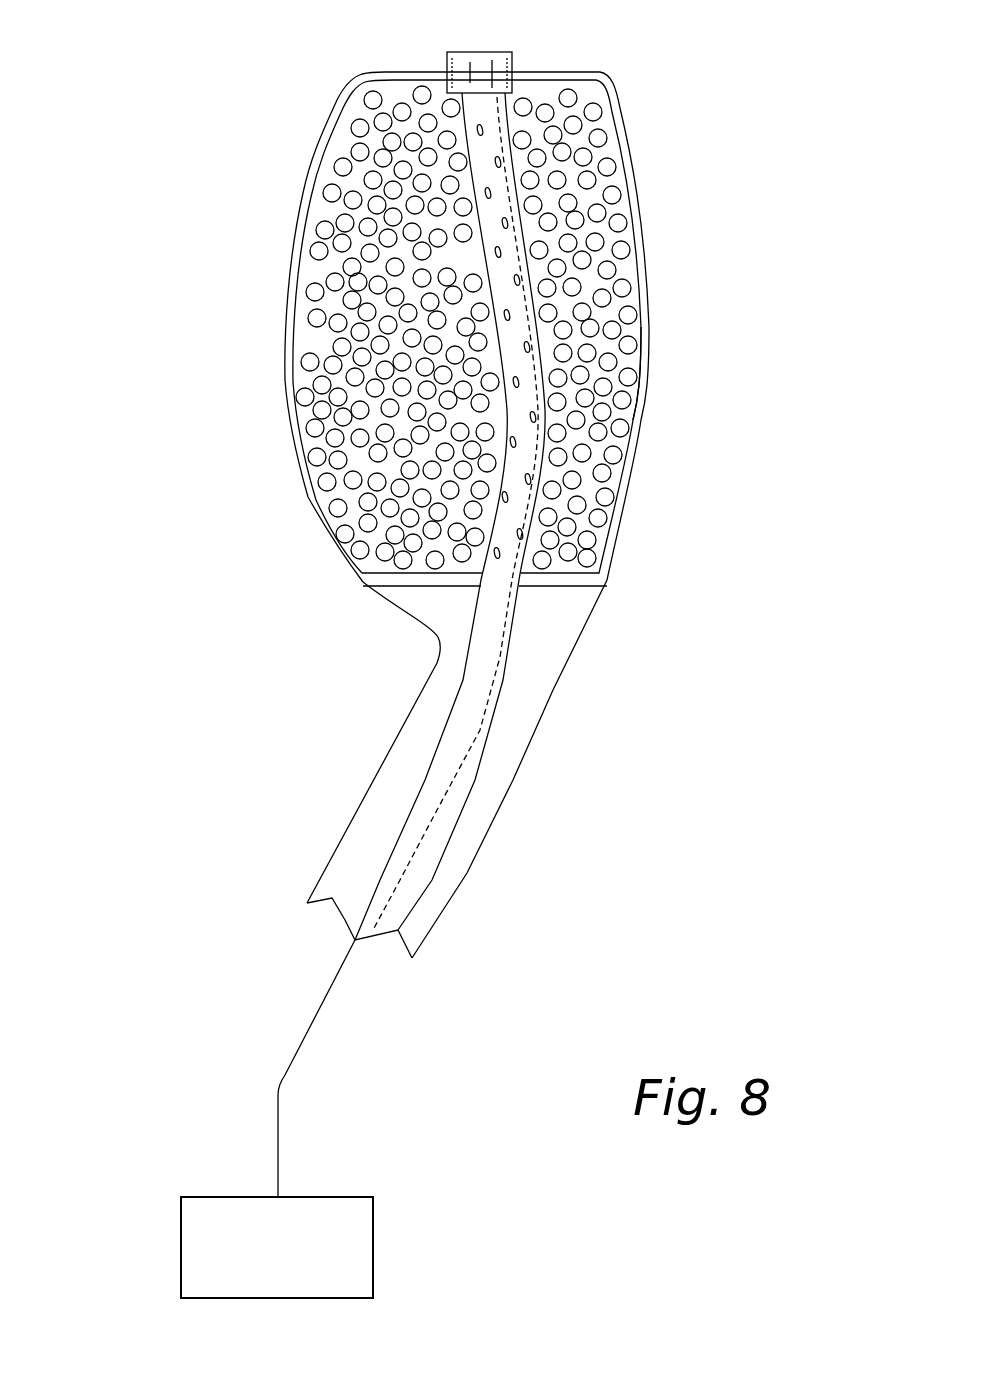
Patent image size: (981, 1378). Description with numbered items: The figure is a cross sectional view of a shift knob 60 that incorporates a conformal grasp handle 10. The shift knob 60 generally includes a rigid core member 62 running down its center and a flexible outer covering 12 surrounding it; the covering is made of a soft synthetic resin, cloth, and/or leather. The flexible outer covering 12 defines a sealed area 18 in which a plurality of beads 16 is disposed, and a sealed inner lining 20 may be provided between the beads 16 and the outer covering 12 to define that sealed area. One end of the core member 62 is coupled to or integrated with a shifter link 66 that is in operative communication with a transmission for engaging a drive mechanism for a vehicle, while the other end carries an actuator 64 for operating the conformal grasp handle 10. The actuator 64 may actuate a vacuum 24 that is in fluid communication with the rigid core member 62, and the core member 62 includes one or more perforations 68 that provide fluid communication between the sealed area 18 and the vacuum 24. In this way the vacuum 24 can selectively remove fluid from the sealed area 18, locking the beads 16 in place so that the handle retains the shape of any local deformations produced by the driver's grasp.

The conformal grasp handle 10 is at (657, 133).
The flexible outer covering 12 is at (650, 310).
The plurality of beads 16 is at (437, 427).
The sealed area 18 is at (327, 335).
The sealed inner lining 20 is at (633, 414).
The vacuum 24 is at (222, 1196).
The shift knob 60 is at (172, 252).
The rigid core member 62 is at (517, 458).
The actuator 64 is at (484, 52).
The shifter link 66 is at (513, 775).
The perforations 68 is at (497, 252).